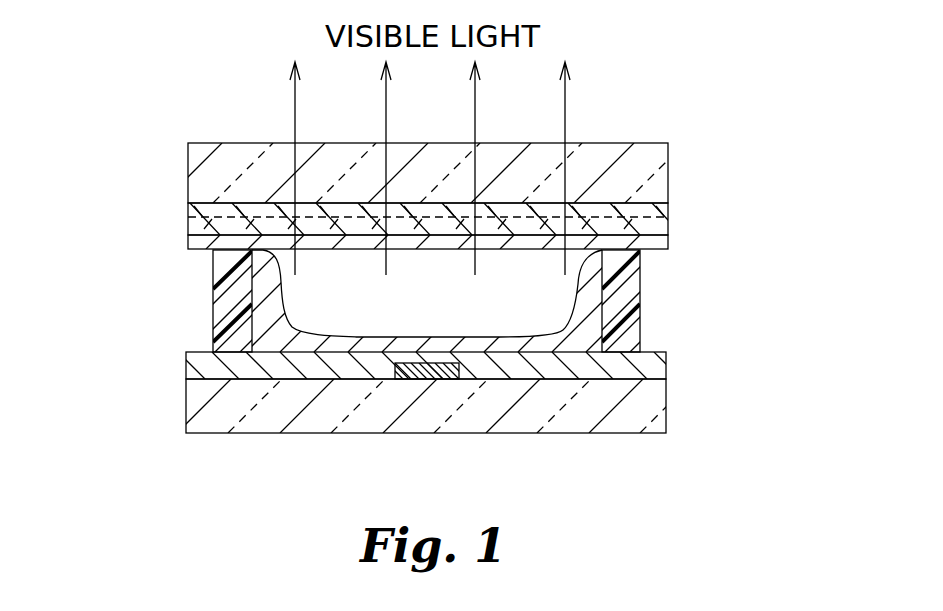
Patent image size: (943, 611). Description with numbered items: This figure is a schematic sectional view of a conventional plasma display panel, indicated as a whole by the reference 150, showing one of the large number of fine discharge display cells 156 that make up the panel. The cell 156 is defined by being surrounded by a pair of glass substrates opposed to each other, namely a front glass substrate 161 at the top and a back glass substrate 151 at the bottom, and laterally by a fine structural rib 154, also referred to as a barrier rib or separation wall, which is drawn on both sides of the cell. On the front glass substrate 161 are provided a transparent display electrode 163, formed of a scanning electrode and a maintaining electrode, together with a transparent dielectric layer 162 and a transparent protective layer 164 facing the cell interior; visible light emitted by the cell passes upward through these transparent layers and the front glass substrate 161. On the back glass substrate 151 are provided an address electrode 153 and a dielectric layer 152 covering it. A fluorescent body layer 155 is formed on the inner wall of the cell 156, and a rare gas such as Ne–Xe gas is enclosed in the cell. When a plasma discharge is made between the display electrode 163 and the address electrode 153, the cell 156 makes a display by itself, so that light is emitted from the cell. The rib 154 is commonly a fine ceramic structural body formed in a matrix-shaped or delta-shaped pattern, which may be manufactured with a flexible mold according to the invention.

The display device 150 is at (178, 110).
The back glass substrate 151 is at (646, 411).
The dielectric layer 152 is at (656, 370).
The address electrode 153 is at (416, 380).
The rib 154 is at (222, 272).
The fluorescent body layer 155 is at (266, 330).
The discharge display cell 156 is at (450, 312).
The front glass substrate 161 is at (652, 156).
The transparent dielectric layer 162 is at (662, 224).
The transparent display electrode 163 is at (667, 211).
The transparent protective layer 164 is at (646, 252).